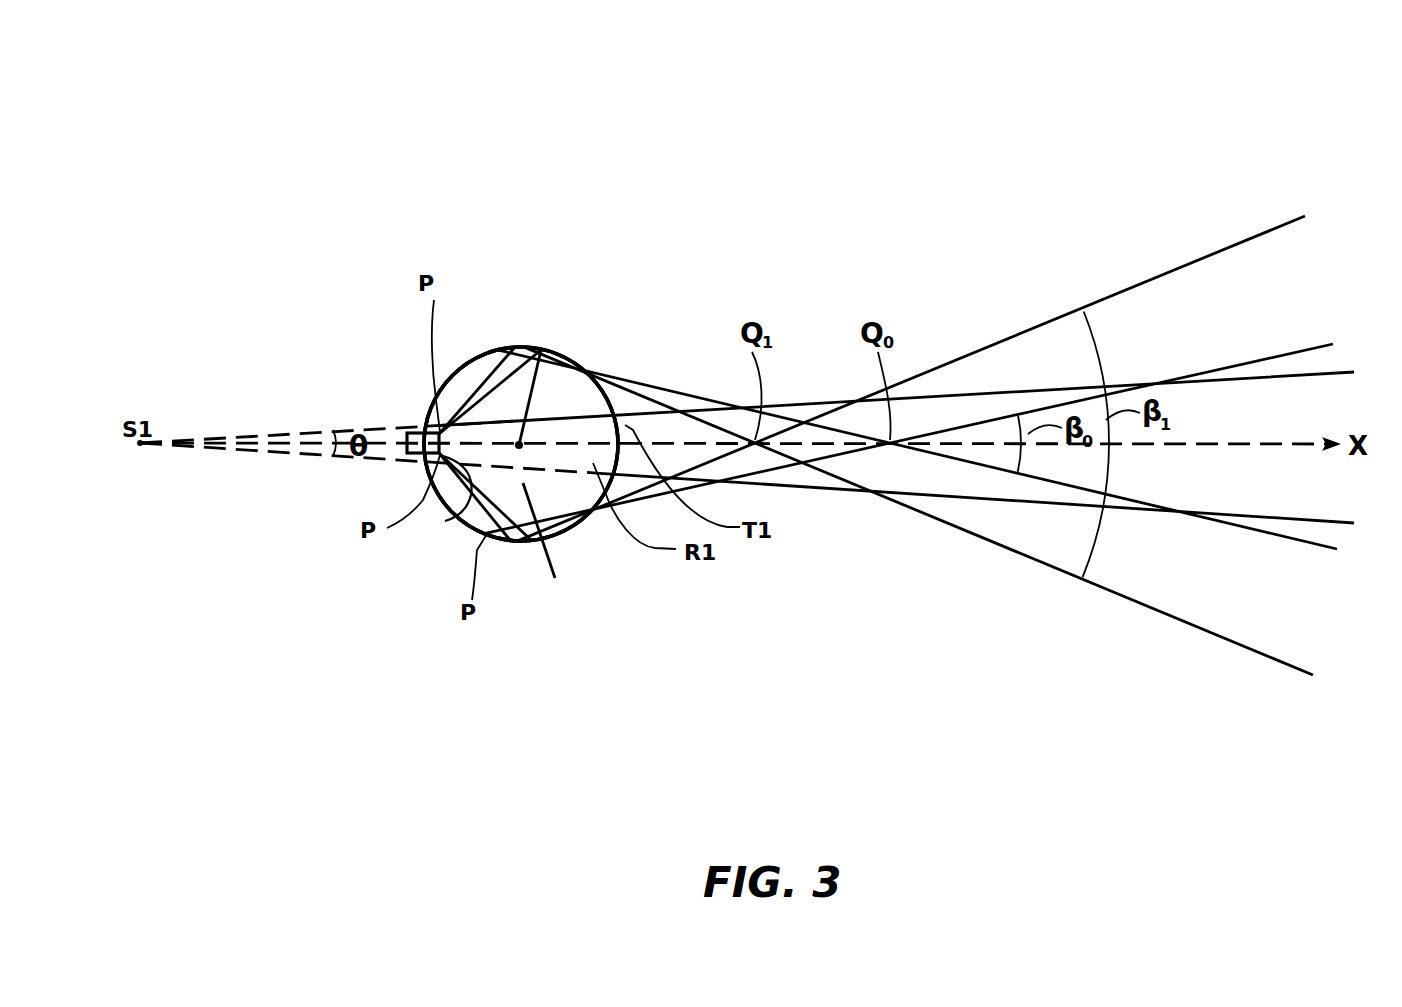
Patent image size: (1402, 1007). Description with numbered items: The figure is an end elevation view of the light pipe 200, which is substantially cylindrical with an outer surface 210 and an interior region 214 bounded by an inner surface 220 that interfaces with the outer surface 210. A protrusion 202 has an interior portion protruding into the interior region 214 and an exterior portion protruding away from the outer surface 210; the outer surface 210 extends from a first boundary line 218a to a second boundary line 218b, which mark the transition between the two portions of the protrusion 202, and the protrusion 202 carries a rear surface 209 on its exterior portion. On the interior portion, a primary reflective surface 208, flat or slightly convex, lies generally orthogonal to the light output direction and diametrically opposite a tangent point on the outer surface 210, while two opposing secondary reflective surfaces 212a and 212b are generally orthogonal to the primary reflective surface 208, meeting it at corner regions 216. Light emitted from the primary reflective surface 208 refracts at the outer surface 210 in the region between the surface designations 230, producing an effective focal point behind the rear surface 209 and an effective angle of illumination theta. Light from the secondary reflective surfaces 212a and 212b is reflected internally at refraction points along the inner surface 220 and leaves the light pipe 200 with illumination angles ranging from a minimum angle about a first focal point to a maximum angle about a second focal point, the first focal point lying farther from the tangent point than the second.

The light pipe 200 is at (440, 155).
The protrusion 202 is at (420, 427).
The primary reflective surface 208 is at (453, 523).
The rear surface 209 is at (405, 433).
The outer surface 210 is at (560, 350).
The secondary reflective surface 212a is at (430, 427).
The secondary reflective surface 212b is at (425, 468).
The interior region 214 is at (556, 580).
The corner regions 216 is at (543, 347).
The first boundary line 218a is at (427, 420).
The second boundary line 218b is at (415, 458).
The inner surface 220 is at (625, 398).
The surface designations 230 is at (607, 400).